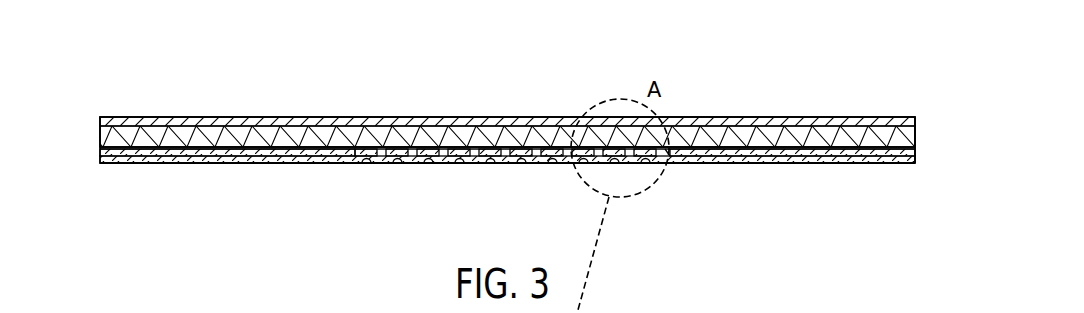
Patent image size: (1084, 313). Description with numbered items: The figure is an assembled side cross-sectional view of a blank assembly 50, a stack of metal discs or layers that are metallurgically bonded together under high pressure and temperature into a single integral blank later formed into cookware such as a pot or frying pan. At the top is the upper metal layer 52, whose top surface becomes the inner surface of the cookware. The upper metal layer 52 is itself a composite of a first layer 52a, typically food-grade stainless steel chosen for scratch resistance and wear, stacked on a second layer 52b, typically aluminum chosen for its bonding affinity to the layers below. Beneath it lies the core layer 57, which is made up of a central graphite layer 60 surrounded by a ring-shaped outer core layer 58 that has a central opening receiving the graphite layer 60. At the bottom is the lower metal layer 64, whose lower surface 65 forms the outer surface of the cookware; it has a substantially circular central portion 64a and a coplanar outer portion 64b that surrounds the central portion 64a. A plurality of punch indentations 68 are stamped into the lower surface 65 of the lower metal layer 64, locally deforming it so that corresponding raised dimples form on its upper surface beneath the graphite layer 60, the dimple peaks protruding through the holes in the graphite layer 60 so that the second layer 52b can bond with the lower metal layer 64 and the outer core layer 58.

The blank assembly 50 is at (727, 113).
The upper metal layer 52 is at (96, 118).
The first layer 52a is at (813, 120).
The second layer 52b is at (895, 135).
The core layer 57 is at (133, 150).
The outer core layer 58 is at (916, 158).
The graphite layer 60 is at (412, 152).
The lower metal layer 64 is at (872, 165).
The central portion 64a is at (541, 166).
The outer portion 64b is at (221, 166).
The lower surface 65 is at (747, 166).
The punch indentations 68 is at (365, 167).